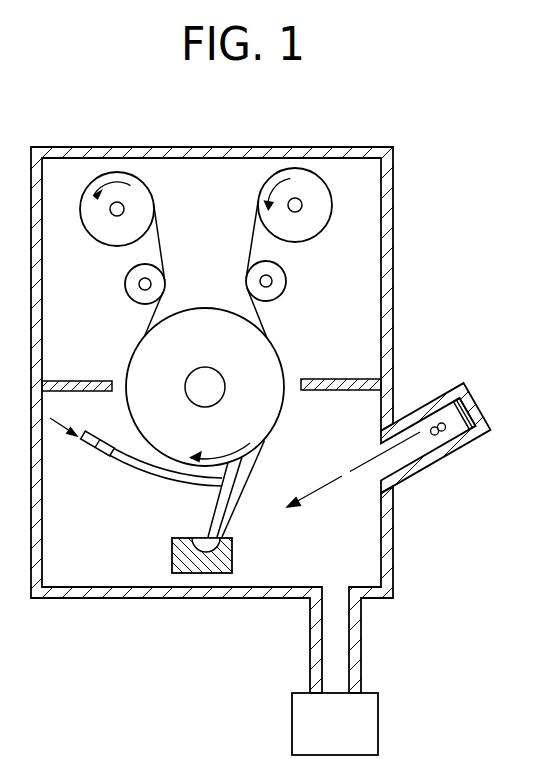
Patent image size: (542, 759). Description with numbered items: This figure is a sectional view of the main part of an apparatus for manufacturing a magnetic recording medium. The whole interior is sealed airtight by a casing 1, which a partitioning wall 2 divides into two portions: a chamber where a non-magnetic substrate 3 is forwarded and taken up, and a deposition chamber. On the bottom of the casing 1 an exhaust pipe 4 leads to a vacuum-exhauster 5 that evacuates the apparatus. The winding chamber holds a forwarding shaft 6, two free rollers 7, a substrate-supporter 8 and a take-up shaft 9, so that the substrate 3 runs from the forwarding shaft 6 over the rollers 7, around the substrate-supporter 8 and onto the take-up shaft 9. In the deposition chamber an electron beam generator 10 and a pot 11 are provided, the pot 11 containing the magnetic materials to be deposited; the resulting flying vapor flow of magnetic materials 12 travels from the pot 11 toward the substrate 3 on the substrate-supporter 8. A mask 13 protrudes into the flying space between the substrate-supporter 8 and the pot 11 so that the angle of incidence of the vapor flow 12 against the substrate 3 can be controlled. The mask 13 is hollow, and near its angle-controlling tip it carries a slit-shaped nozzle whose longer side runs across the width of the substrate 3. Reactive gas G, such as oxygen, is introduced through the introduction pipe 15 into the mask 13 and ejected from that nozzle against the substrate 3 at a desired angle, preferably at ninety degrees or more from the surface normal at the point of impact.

The casing 1 is at (393, 238).
The partitioning wall 2 is at (335, 379).
The non-magnetic substrate 3 is at (250, 231).
The exhaust pipe 4 is at (361, 632).
The vacuum-exhauster 5 is at (378, 722).
The forwarding shaft 6 is at (320, 197).
The free roller 7 is at (130, 290).
The substrate-supporter 8 is at (143, 350).
The take-up shaft 9 is at (117, 172).
The electron beam generator 10 is at (428, 424).
The pot 11 is at (178, 562).
The flying vapor flow of magnetic materials 12 is at (215, 545).
The mask 13 is at (140, 480).
The introduction pipe 15 is at (90, 448).
The gas G is at (63, 419).